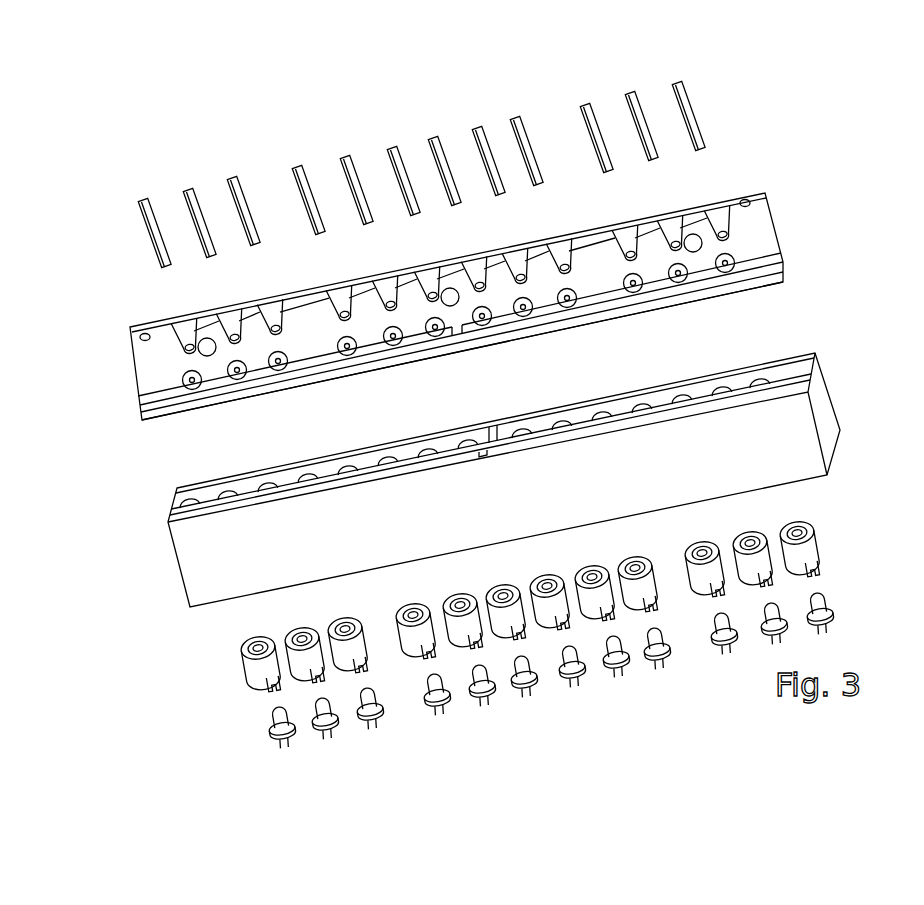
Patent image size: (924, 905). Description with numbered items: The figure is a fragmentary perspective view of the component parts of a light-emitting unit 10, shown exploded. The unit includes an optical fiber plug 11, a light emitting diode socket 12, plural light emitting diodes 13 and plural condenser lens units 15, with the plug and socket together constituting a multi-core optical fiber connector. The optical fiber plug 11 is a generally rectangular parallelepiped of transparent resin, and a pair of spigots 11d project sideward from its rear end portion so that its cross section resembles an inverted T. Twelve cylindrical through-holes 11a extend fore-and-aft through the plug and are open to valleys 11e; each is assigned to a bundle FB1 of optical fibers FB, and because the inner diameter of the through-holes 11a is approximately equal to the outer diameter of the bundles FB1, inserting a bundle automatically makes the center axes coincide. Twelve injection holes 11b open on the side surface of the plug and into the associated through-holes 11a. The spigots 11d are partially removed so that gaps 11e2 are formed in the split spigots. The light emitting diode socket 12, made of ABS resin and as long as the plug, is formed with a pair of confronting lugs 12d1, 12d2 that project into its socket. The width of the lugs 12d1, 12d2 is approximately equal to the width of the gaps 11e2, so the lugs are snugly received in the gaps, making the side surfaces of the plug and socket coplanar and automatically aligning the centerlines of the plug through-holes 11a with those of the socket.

The light-emitting unit 10 is at (811, 172).
The optical fiber plug 11 is at (772, 212).
The cylindrical through-holes 11a is at (232, 322).
The injection holes 11b is at (738, 253).
The spigots 11d is at (768, 283).
The valleys 11e is at (176, 326).
The gaps 11e2 is at (465, 350).
The light emitting diode socket 12 is at (818, 420).
The lug 12d1 is at (494, 440).
The lug 12d2 is at (484, 446).
The light emitting diodes 13 is at (832, 598).
The condenser lens units 15 is at (810, 550).
The optical fibers FB is at (653, 157).
The bundles of optical fibers FB1 is at (191, 190).